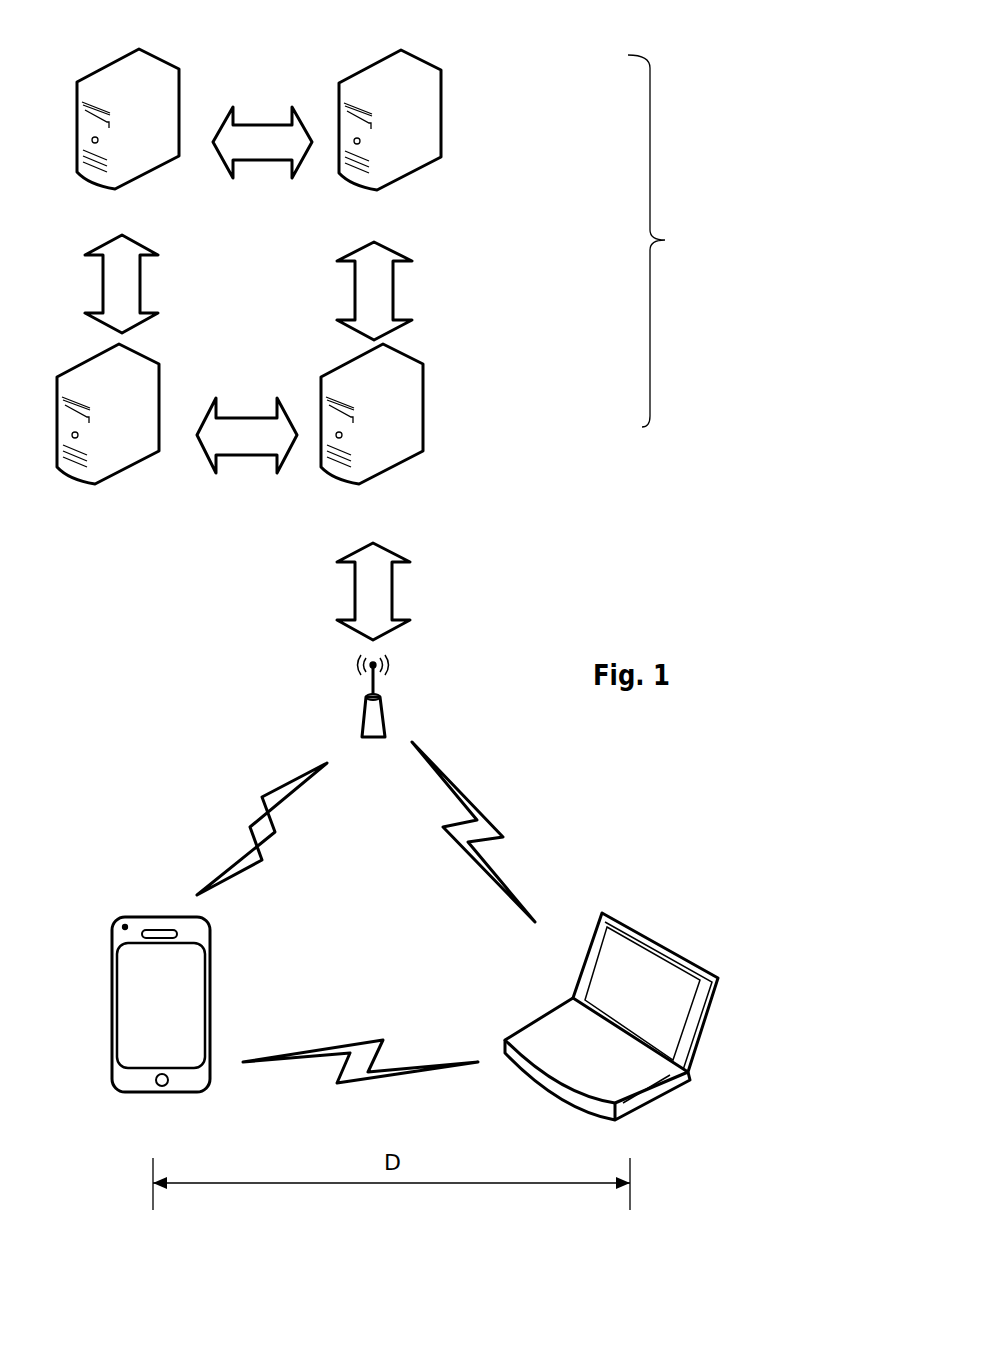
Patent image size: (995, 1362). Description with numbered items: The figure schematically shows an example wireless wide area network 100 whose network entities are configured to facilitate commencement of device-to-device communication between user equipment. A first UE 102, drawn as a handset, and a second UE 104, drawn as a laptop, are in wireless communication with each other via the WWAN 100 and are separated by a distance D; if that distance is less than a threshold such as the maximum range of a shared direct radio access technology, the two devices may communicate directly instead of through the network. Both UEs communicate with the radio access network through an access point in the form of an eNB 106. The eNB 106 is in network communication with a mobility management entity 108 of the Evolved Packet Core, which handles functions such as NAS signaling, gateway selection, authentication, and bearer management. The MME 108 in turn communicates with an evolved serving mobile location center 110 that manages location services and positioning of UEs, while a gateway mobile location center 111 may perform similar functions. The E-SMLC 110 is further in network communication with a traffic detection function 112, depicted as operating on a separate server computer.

The wireless wide area network 100 is at (557, 66).
The first user equipment 102 is at (210, 1020).
The second user equipment 104 is at (687, 955).
The evolved Node B 106 is at (365, 703).
The mobility management entity 108 is at (423, 408).
The evolved serving mobile location center 110 is at (160, 410).
The gateway mobile location center 111 is at (440, 117).
The traffic detection function 112 is at (178, 110).